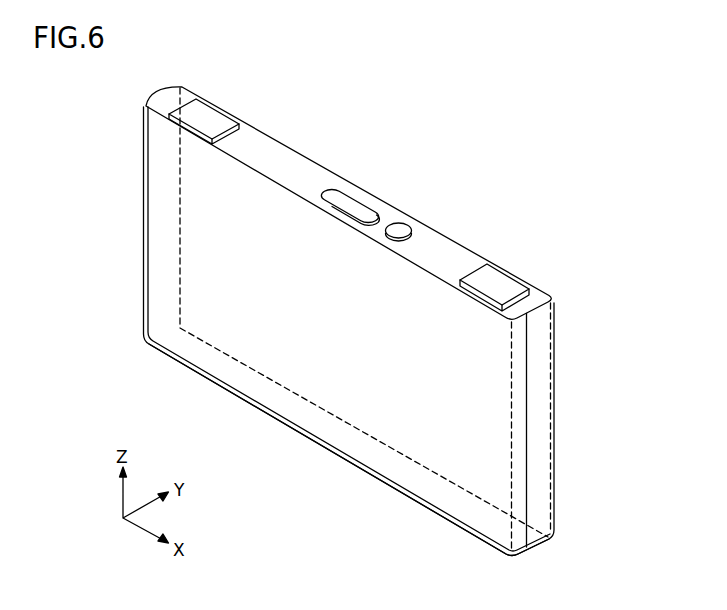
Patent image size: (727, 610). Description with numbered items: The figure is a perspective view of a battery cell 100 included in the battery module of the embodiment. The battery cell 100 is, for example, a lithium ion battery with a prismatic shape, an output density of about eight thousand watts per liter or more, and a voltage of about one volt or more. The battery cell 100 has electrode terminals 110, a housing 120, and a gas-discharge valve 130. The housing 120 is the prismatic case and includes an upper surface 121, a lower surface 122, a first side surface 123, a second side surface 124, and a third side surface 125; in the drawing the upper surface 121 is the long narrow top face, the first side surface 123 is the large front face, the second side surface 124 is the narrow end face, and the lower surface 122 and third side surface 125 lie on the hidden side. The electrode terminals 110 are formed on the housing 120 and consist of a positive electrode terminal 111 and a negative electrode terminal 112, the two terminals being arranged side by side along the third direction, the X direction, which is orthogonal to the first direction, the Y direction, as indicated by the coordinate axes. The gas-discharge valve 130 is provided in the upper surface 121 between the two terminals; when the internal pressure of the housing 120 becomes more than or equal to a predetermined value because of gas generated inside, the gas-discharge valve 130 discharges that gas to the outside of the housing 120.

The battery cell 100 is at (352, 315).
The electrode terminals 110 is at (361, 178).
The positive electrode terminal 111 is at (207, 113).
The negative electrode terminal 112 is at (497, 283).
The housing 120 is at (352, 337).
The upper surface 121 is at (283, 165).
The lower surface 122 is at (465, 510).
The first side surface 123 is at (357, 443).
The second side surface 124 is at (503, 375).
The third side surface 125 is at (555, 452).
The gas-discharge valve 130 is at (352, 203).